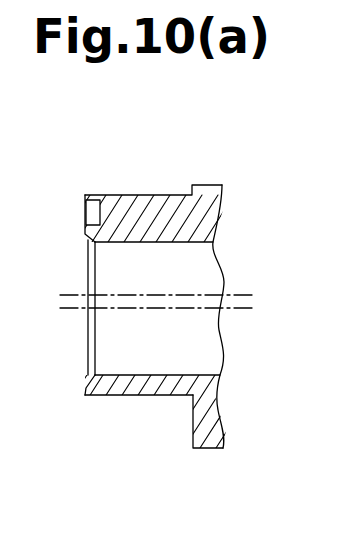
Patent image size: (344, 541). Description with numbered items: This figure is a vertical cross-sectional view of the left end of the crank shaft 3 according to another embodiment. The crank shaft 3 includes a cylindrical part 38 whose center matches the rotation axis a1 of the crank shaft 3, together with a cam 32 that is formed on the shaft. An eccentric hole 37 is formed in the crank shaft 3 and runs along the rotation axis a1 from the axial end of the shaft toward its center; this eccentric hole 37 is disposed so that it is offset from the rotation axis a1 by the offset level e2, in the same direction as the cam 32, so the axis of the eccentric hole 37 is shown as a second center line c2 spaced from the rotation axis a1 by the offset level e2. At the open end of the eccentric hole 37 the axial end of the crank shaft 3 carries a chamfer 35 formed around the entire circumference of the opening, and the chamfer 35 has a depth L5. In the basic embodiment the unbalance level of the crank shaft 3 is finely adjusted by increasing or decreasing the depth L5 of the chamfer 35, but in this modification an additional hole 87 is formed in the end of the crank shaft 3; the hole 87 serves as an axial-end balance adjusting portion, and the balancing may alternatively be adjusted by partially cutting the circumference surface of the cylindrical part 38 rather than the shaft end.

The crank shaft 3 is at (147, 194).
The additional hole 87 is at (86, 212).
The eccentric hole 37 is at (120, 243).
The chamfer 35 is at (86, 380).
The cylindrical part 38 is at (143, 397).
The cam 32 is at (208, 450).
The depth of chamfer L5 is at (112, 259).
The rotation axis a1 is at (58, 294).
The center line c2 is at (82, 310).
The offset level e2 is at (155, 327).